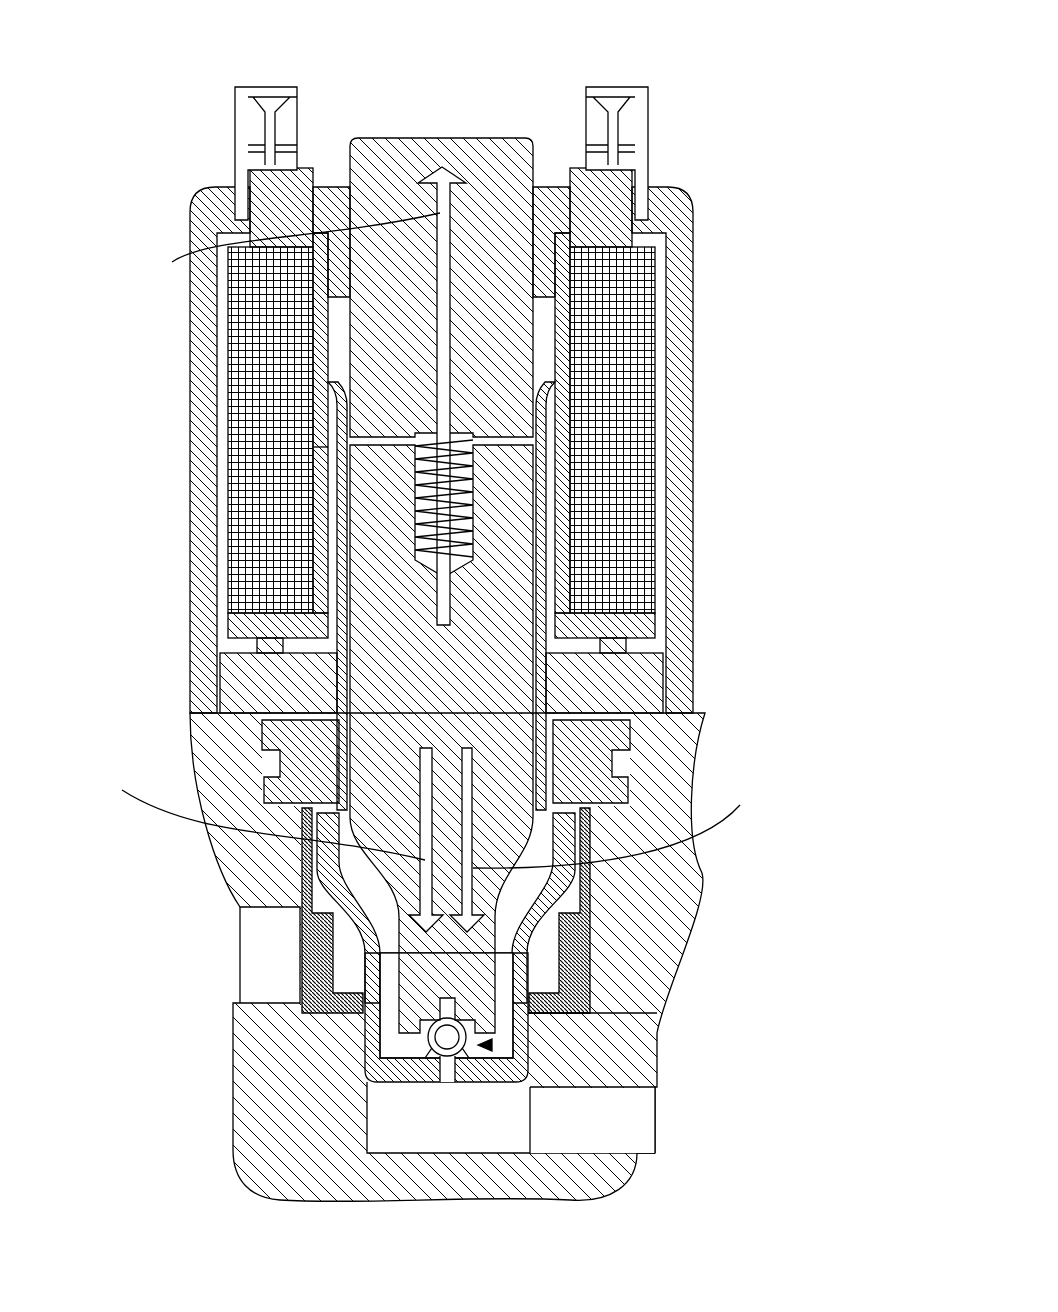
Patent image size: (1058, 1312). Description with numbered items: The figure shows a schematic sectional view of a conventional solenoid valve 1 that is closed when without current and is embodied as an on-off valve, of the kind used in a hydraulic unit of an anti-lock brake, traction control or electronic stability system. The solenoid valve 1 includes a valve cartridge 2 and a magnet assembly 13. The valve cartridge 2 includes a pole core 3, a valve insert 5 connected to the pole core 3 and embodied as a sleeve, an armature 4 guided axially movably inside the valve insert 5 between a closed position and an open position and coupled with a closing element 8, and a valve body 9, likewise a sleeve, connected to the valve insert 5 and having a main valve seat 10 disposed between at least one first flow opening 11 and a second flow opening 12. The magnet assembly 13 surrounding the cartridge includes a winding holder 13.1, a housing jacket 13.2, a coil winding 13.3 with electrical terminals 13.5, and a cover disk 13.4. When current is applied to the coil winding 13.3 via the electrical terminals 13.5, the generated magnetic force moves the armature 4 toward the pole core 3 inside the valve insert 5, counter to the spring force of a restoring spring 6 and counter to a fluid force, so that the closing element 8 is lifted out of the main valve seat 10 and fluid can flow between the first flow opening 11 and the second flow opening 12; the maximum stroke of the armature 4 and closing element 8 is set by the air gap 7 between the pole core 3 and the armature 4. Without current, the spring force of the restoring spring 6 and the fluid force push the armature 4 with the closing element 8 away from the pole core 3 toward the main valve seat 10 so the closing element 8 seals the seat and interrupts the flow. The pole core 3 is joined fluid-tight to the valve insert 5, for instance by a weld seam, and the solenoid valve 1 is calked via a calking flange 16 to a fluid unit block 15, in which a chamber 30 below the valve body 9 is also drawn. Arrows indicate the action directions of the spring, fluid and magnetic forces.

The solenoid valve 1 is at (146, 116).
The valve cartridge 2 is at (465, 530).
The pole core 3 is at (425, 163).
The armature 4 is at (405, 653).
The valve insert 5 is at (548, 555).
The restoring spring 6 is at (415, 482).
The air gap 7 is at (318, 447).
The closing element 8 is at (440, 1040).
The valve body 9 is at (355, 991).
The main valve seat 10 is at (533, 1035).
The first flow opening 11 is at (370, 968).
The second flow opening 12 is at (447, 1068).
The magnet assembly 13 is at (489, 370).
The winding holder 13.1 is at (565, 395).
The housing jacket 13.2 is at (680, 310).
The coil winding 13.3 is at (635, 460).
The cover disk 13.4 is at (650, 678).
The electrical terminals 13.5 is at (612, 108).
The fluid unit block 15 is at (449, 957).
The calking flange 16 is at (600, 765).
The outlet chamber 30 is at (620, 1124).